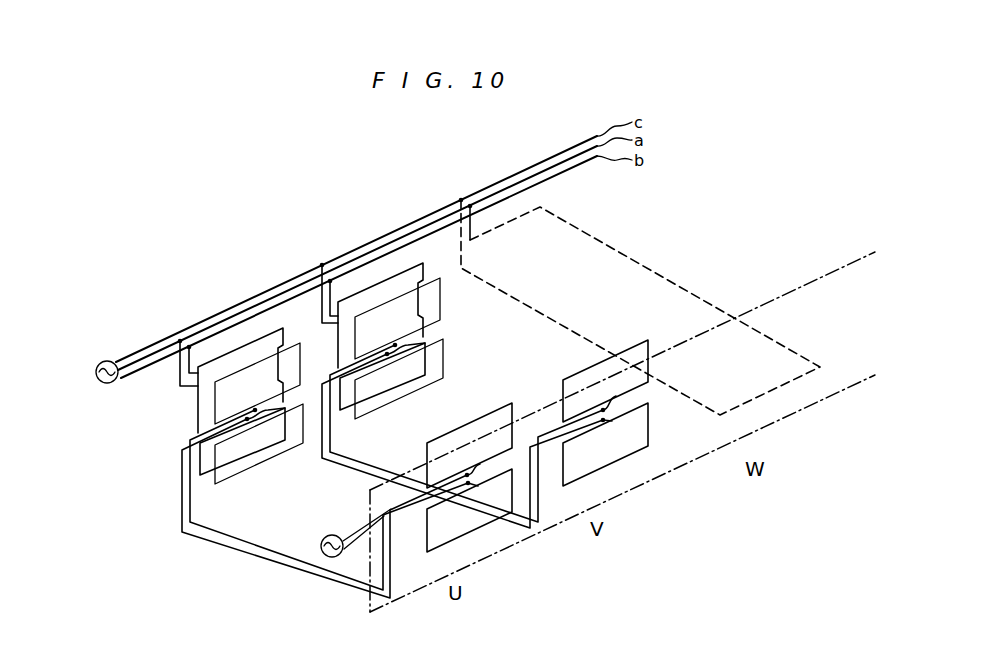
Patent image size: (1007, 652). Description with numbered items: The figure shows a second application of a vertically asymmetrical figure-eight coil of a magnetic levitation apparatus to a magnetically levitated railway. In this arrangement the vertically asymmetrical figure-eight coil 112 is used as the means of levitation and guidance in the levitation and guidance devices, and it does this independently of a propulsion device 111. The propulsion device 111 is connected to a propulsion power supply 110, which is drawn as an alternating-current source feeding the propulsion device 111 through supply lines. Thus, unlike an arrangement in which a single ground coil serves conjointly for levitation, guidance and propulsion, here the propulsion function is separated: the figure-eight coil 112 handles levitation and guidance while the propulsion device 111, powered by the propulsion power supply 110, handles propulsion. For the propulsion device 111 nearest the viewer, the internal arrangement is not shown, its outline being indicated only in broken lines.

The propulsion power supply 110 is at (100, 361).
The propulsion device 111 is at (234, 348).
The vertically asymmetrical figure-eight coil 112 is at (198, 408).